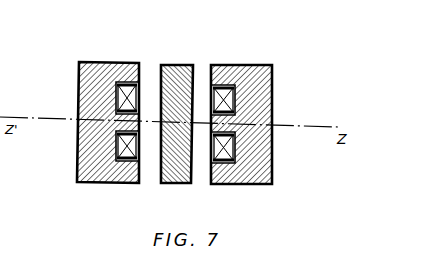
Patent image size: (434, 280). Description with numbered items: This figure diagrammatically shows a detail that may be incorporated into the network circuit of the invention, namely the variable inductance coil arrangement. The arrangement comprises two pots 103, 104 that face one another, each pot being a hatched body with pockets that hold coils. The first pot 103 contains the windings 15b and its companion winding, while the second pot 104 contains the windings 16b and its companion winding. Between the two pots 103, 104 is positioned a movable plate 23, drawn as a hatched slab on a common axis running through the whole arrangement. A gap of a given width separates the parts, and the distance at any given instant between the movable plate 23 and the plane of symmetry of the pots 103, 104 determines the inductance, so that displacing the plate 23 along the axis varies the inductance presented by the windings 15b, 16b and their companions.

The pot 103 is at (100, 186).
The movable plate 23 is at (178, 186).
The pot 104 is at (246, 186).
The winding 15b is at (119, 86).
The winding 16b is at (228, 88).